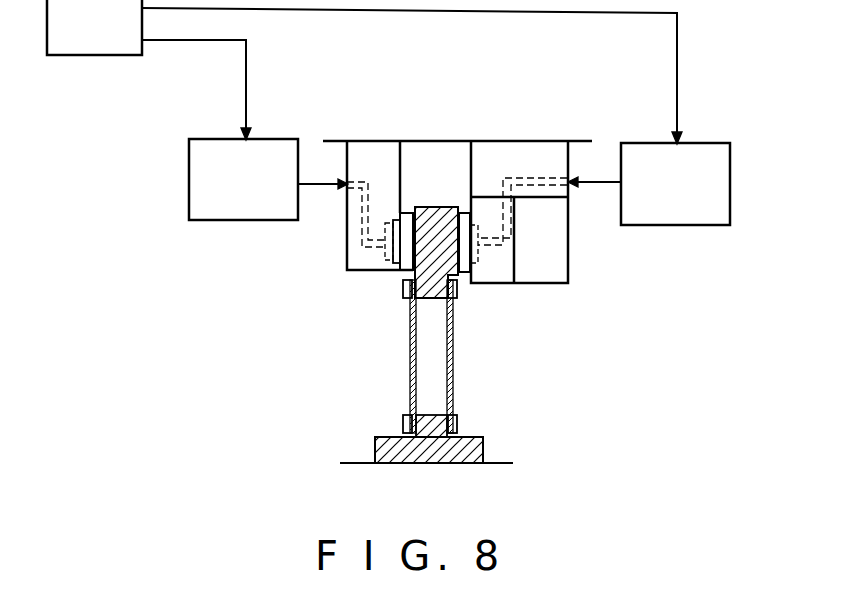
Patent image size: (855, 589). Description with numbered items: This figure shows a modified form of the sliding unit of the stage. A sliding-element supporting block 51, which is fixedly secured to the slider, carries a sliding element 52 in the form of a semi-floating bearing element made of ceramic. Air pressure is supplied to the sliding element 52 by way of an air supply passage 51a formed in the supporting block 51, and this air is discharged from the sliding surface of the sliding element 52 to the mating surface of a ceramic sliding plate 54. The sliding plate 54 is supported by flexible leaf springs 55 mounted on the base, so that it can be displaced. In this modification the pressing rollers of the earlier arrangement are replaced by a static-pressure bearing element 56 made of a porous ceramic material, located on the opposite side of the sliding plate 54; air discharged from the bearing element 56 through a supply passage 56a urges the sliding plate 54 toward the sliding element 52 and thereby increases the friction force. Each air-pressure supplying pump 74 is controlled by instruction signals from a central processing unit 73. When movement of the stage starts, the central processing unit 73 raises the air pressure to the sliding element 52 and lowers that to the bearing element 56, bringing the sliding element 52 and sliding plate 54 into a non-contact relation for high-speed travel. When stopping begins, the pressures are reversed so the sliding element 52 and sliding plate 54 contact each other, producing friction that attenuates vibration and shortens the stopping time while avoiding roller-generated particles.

The central processing unit 73 is at (93, 57).
The air-pressure supplying pump 74 is at (232, 222).
The sliding-element supporting block 51 is at (522, 153).
The air supply passage 51a is at (573, 196).
The sliding element 52 is at (463, 279).
The sliding plate 54 is at (432, 206).
The leaf springs 55 is at (453, 363).
The static-pressure bearing element 56 is at (407, 273).
The supply passage 56a is at (362, 243).